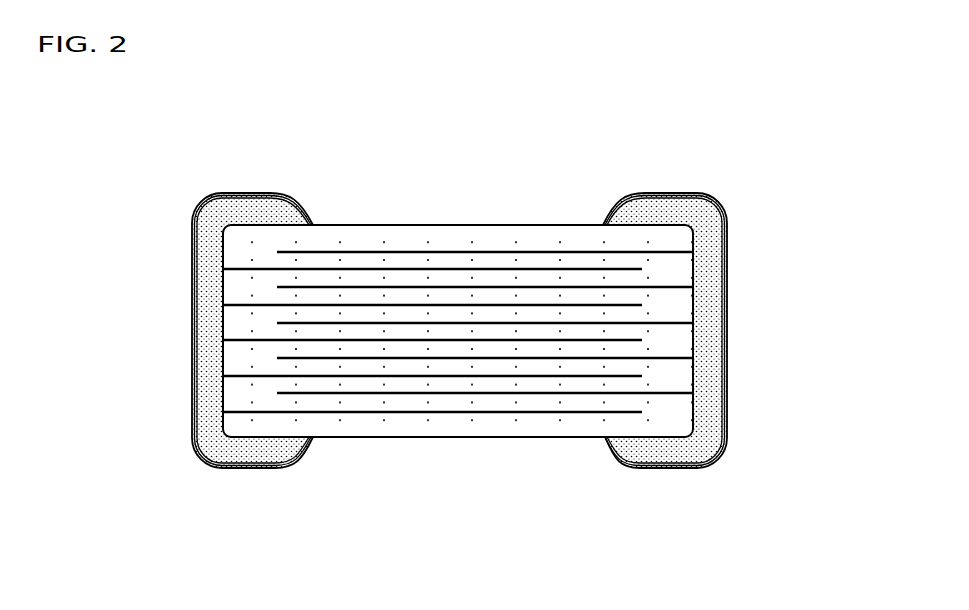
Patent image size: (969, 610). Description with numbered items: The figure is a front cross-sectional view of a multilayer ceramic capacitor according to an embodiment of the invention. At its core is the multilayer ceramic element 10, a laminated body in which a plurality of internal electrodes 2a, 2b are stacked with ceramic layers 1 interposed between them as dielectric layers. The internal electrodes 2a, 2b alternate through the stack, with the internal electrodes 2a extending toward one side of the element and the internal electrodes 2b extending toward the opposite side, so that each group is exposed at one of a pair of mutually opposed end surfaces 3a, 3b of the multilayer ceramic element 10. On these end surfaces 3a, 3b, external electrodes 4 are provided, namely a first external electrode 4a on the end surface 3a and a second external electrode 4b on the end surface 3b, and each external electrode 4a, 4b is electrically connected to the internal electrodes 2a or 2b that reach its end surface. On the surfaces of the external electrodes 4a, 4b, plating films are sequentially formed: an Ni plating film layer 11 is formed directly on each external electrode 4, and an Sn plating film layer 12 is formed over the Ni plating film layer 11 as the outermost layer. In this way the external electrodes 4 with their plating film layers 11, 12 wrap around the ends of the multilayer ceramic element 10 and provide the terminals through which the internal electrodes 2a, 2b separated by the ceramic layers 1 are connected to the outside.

The multilayer ceramic element 10 is at (456, 439).
The ceramic layer 1 is at (538, 300).
The internal electrode 2a is at (327, 304).
The internal electrode 2b is at (586, 357).
The end surface of multilayer ceramic element 3a is at (198, 400).
The end surface of multilayer ceramic element 3b is at (702, 407).
The external electrode 4 is at (457, 330).
The external electrode 4a is at (200, 347).
The external electrode 4b is at (712, 350).
The Ni plating film layer 11 is at (193, 318).
The Sn plating film layer 12 is at (193, 231).